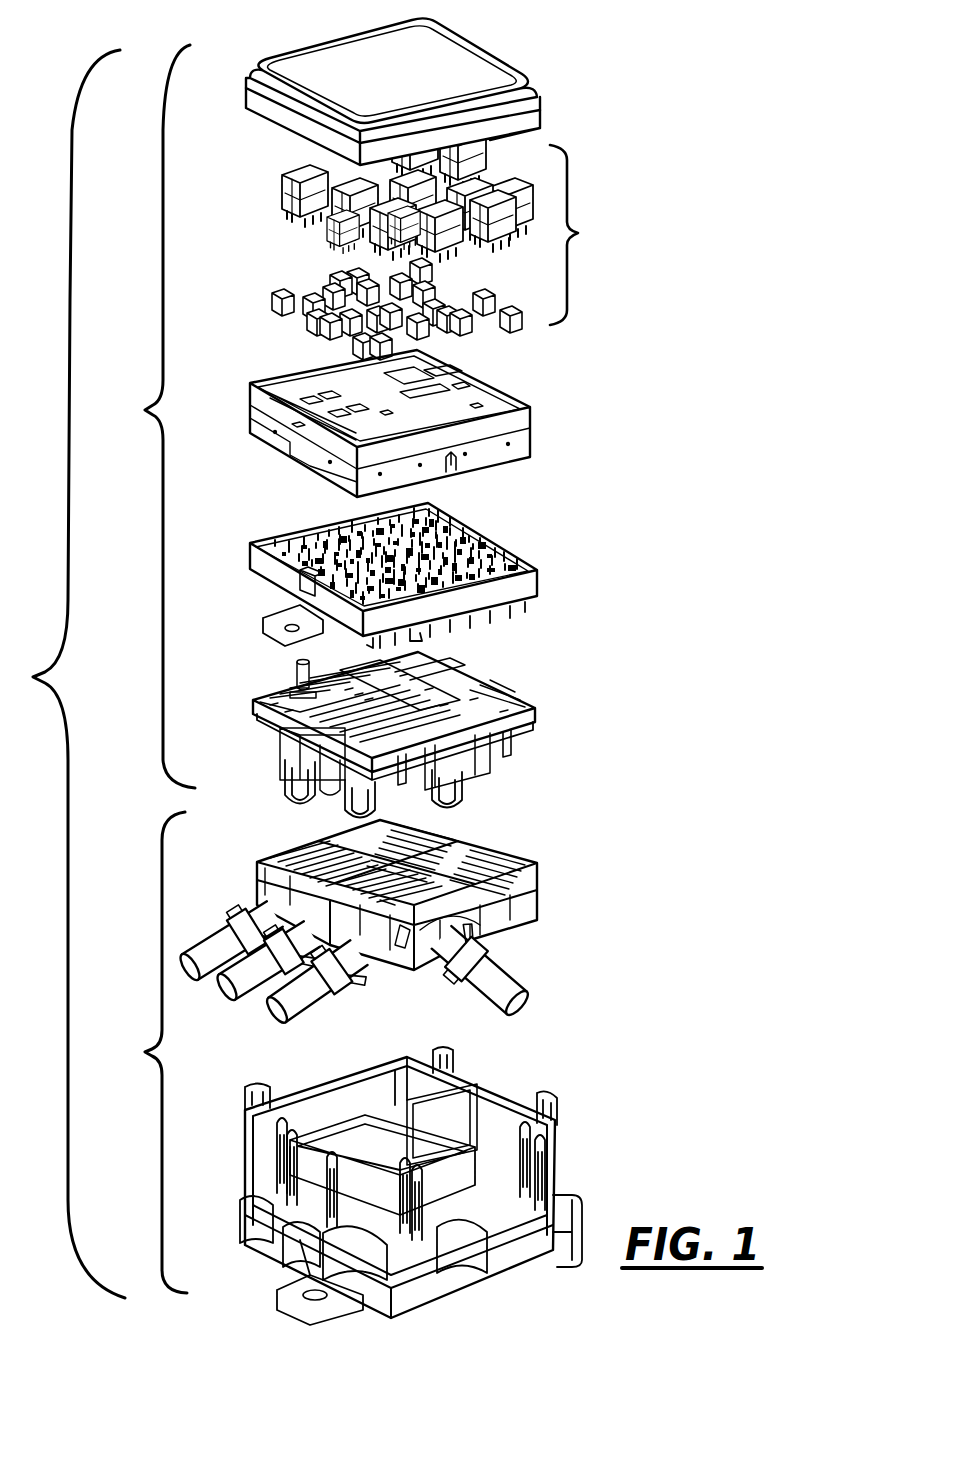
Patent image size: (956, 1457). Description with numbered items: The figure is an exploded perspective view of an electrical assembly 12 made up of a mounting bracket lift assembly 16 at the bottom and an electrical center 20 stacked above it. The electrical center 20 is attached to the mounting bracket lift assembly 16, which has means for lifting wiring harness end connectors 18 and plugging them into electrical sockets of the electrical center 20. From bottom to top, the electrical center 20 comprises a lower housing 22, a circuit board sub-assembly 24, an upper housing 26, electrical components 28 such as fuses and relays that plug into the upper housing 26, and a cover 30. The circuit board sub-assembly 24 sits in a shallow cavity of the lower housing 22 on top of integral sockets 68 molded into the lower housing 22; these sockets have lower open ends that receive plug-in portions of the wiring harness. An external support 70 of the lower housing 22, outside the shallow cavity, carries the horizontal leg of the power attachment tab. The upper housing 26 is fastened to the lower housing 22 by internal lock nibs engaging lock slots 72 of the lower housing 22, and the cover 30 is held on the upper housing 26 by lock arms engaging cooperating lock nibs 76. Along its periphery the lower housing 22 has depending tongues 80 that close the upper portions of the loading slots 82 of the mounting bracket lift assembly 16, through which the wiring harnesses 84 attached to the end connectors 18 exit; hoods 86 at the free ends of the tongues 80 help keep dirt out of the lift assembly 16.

The electrical assembly 12 is at (62, 674).
The mounting bracket lift assembly 16 is at (148, 1052).
The wiring harness end connectors 18 is at (288, 858).
The electrical center 20 is at (152, 416).
The lower housing 22 is at (411, 732).
The circuit board sub-assembly 24 is at (517, 556).
The upper housing 26 is at (510, 396).
The electrical components 28 is at (443, 239).
The cover 30 is at (508, 62).
The integral sockets 68 is at (288, 698).
The external support 70 is at (290, 760).
The lock slots 72 is at (420, 762).
The lock nibs 76 is at (455, 466).
The depending tongues 80 is at (347, 787).
The loading slots 82 is at (375, 1085).
The wiring harnesses 84 is at (203, 970).
The hoods 86 is at (447, 796).